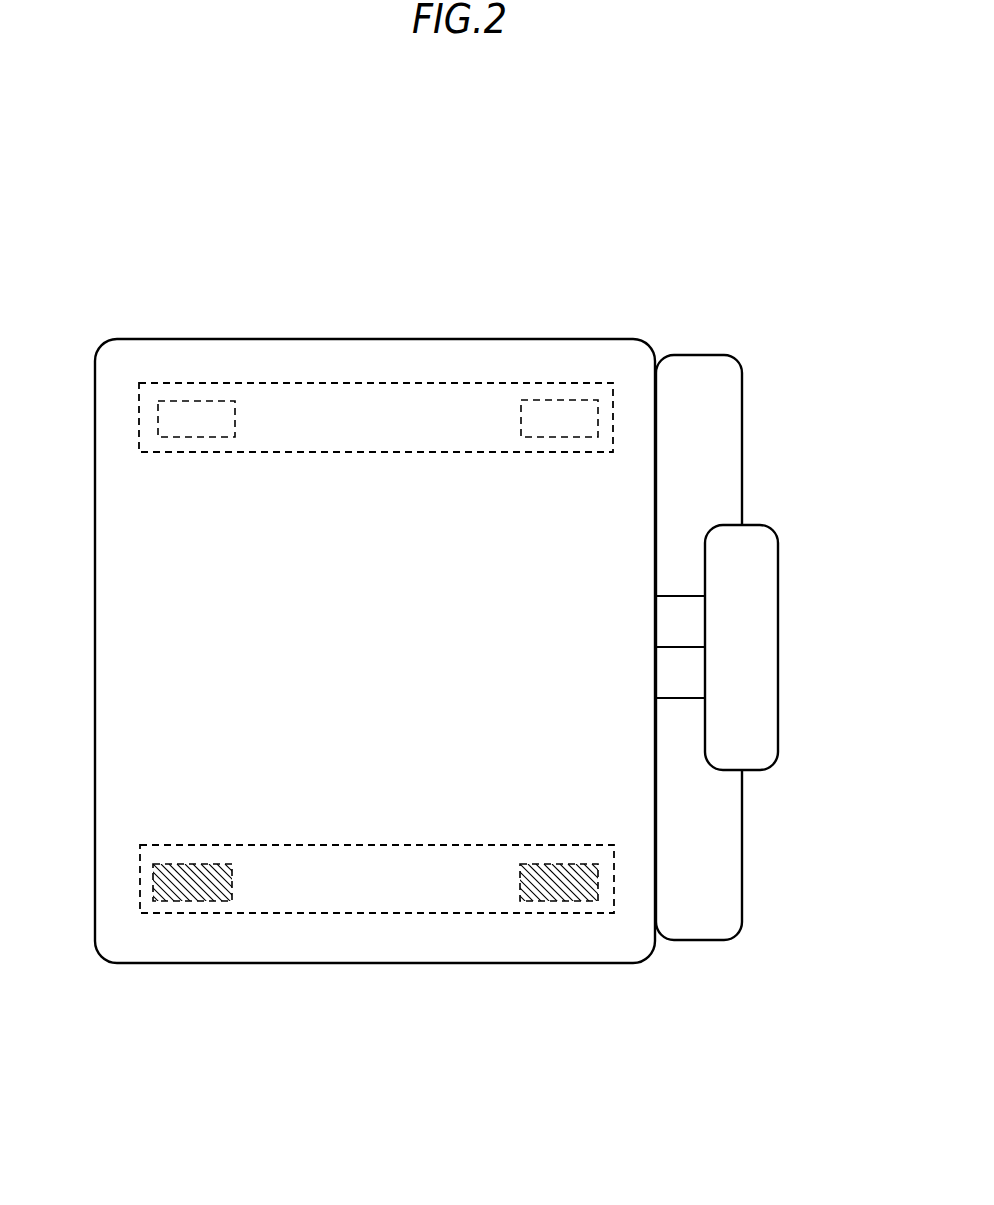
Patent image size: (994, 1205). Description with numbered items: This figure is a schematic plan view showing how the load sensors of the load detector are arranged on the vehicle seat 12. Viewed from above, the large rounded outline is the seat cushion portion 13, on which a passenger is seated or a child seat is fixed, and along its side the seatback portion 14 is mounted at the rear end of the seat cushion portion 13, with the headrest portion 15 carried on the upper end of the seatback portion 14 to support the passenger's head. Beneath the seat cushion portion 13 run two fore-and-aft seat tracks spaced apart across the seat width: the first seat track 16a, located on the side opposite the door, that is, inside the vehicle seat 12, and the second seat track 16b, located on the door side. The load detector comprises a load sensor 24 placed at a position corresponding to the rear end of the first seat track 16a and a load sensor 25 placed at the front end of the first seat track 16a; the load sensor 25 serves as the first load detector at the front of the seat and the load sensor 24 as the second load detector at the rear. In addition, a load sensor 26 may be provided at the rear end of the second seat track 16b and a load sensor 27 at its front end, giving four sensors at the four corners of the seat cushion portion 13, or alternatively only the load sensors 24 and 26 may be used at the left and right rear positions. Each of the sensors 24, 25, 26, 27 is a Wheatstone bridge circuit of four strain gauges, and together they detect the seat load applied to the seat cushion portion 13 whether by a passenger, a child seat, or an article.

The vehicle seat 12 is at (375, 563).
The seat cushion portion 13 is at (326, 328).
The seatback portion 14 is at (699, 728).
The headrest portion 15 is at (748, 490).
The first seat track 16a is at (377, 984).
The second seat track 16b is at (376, 323).
The load sensor 24 is at (560, 987).
The load sensor 25 is at (193, 986).
The load sensor 26 is at (571, 322).
The load sensor 27 is at (204, 328).